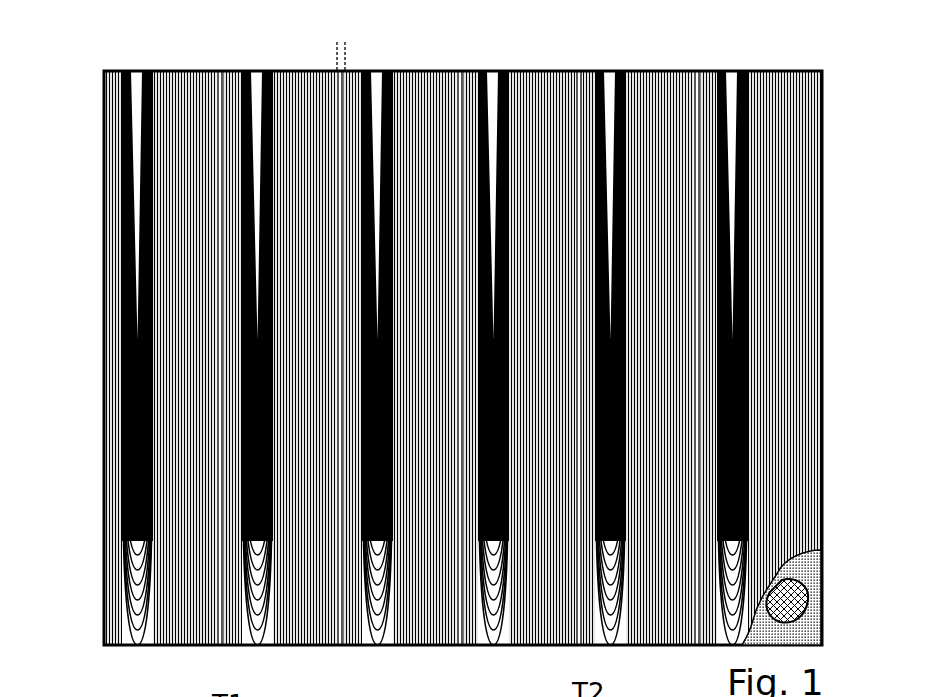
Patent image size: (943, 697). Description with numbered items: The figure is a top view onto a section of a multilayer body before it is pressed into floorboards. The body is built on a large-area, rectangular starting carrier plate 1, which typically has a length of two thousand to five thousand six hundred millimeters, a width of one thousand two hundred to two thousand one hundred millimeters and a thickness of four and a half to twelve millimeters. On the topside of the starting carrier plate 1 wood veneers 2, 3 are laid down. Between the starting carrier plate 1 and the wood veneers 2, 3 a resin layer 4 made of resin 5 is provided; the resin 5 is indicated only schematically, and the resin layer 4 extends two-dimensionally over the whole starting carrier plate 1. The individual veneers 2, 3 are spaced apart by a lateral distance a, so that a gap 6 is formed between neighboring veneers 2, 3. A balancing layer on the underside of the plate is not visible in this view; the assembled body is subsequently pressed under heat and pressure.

The starting carrier plate 1 is at (832, 566).
The wood veneer 2 is at (803, 243).
The wood veneer 3 is at (112, 562).
The resin layer 4 is at (814, 618).
The resin 5 is at (800, 600).
The gap 6 is at (222, 62).
The lateral distance a is at (300, 33).